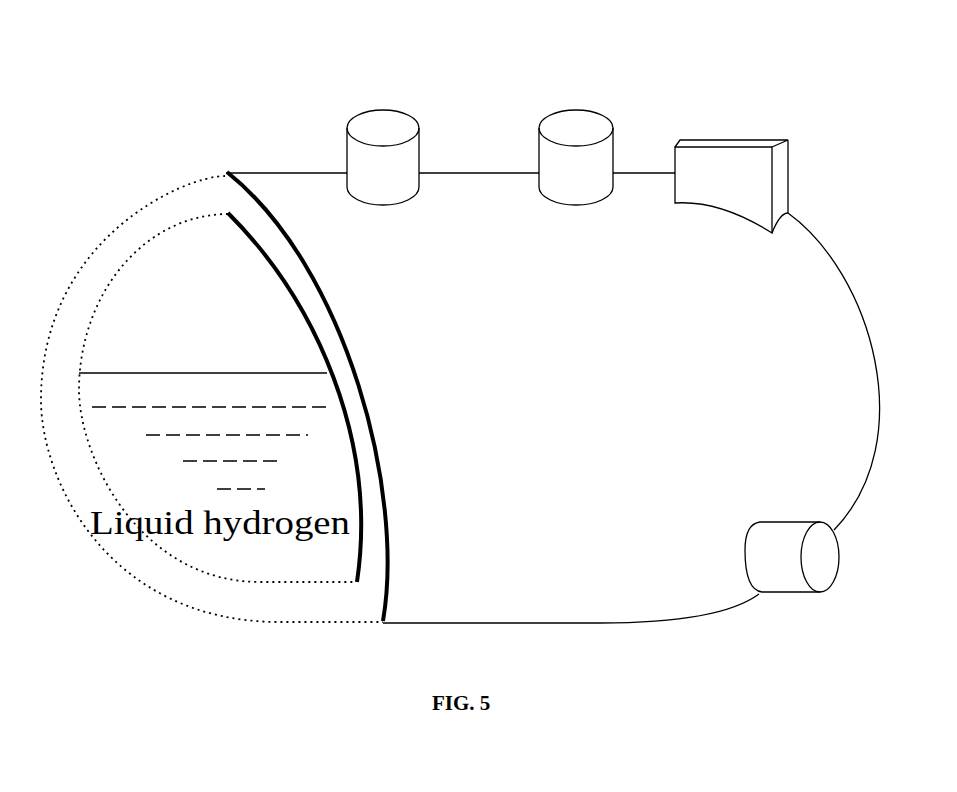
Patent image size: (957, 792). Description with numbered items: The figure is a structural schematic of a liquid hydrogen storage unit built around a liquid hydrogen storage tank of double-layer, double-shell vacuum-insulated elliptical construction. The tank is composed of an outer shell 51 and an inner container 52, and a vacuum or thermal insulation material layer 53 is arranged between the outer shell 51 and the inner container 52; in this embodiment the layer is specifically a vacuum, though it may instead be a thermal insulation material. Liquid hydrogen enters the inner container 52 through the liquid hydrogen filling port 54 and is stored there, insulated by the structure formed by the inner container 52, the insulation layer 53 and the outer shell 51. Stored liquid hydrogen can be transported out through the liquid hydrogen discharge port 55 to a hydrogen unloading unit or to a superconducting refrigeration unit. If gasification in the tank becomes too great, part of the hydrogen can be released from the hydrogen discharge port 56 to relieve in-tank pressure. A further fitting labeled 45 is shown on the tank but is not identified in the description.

The outer shell 51 is at (296, 233).
The inner container 52 is at (174, 224).
The vacuum or thermal insulation material layer 53 is at (217, 193).
The liquid hydrogen filling port 54 is at (406, 105).
The pressure relief device 45 is at (599, 105).
The liquid hydrogen discharge port 55 is at (738, 132).
The hydrogen discharge port 56 is at (789, 604).